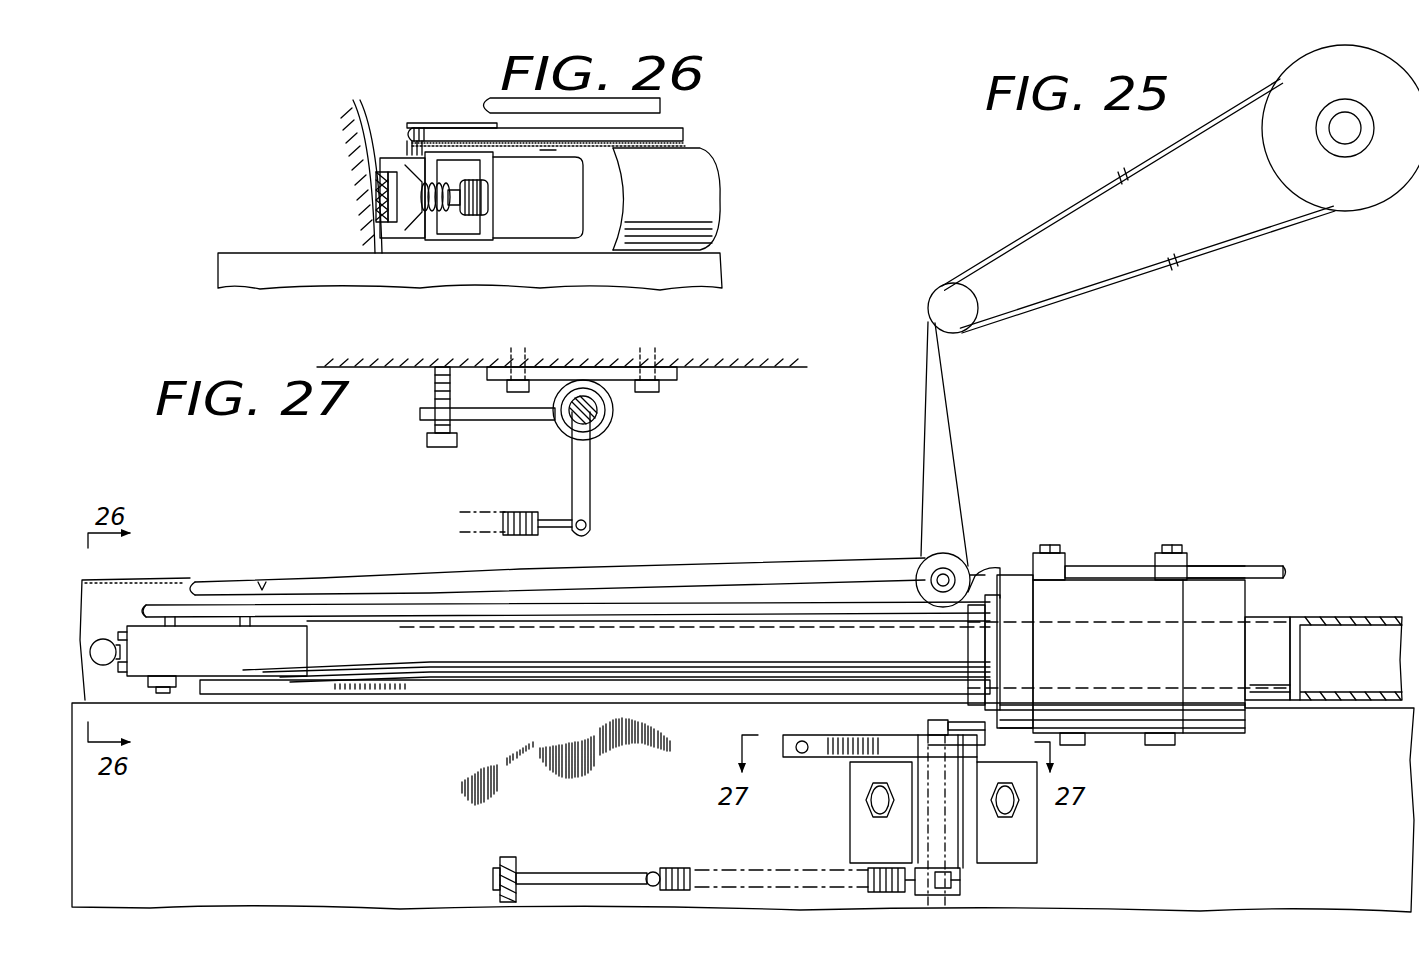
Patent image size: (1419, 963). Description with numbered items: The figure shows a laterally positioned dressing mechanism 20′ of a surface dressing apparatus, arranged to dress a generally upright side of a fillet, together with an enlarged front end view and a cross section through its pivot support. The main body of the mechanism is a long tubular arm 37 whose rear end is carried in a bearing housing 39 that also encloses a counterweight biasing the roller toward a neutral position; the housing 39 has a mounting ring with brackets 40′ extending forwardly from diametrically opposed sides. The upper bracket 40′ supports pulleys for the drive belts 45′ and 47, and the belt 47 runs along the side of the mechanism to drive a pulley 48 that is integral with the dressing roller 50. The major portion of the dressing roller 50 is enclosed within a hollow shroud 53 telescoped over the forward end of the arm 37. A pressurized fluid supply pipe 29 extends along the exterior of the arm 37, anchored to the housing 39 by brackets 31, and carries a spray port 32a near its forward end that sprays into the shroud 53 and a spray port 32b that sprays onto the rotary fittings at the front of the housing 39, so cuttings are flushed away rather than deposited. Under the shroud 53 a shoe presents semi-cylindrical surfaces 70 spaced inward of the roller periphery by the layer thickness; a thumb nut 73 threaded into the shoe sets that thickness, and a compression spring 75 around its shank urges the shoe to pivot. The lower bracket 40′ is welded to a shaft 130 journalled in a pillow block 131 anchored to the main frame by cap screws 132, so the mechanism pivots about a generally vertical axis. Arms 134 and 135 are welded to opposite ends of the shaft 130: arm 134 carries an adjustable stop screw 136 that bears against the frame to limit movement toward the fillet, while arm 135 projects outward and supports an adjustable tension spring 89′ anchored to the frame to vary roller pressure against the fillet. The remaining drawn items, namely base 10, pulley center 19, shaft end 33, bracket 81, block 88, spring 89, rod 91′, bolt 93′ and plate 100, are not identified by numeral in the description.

In FIG. 25, the base 10 is at (743, 807).
In FIG. 25, the drive pulley shaft 19 is at (1345, 140).
In FIG. 26, the dressing mechanism 20′ is at (728, 208).
In FIG. 25, the dressing mechanism 20′ is at (1102, 520).
In FIG. 26, the pressurized fluid supply pipe 29 is at (688, 140).
In FIG. 25, the pressurized fluid supply pipe 29 is at (683, 566).
In FIG. 25, the brackets 31 is at (1168, 582).
In FIG. 26, the spray port 32a is at (557, 112).
In FIG. 25, the spray port 32a is at (263, 584).
In FIG. 25, the spray port 32b is at (986, 574).
In FIG. 25, the shaft 33 is at (1352, 617).
In FIG. 26, the tubular arm 37 is at (713, 163).
In FIG. 25, the tubular arm 37 is at (718, 656).
In FIG. 25, the housing 39 is at (1129, 660).
In FIG. 25, the brackets 40′ is at (998, 566).
In FIG. 25, the drive belt 45′ is at (1118, 290).
In FIG. 26, the belt 47 is at (662, 126).
In FIG. 25, the belt 47 is at (412, 600).
In FIG. 26, the pulley 48 is at (445, 126).
In FIG. 25, the pulley 48 is at (165, 603).
In FIG. 26, the dressing roller 50 is at (375, 194).
In FIG. 26, the shroud 53 is at (558, 222).
In FIG. 25, the shroud 53 is at (212, 659).
In FIG. 26, the semi-cylindrical surfaces 70 is at (378, 166).
In FIG. 26, the thumb nut 73 is at (488, 197).
In FIG. 25, the thumb nut 73 is at (103, 639).
In FIG. 26, the compression spring 75 is at (428, 215).
In FIG. 25, the bracket 81 is at (312, 696).
In FIG. 25, the block 88 is at (1228, 578).
In FIG. 27, the spring 89 is at (518, 512).
In FIG. 25, the adjustable tension spring 89′ is at (668, 868).
In FIG. 25, the rod 91′ is at (570, 873).
In FIG. 25, the bolt 93′ is at (500, 862).
In FIG. 26, the guide plate 100 is at (345, 102).
In FIG. 25, the guide plate 100 is at (215, 578).
In FIG. 25, the shaft 130 is at (932, 727).
In FIG. 27, the pillow block 131 is at (680, 376).
In FIG. 25, the pillow block 131 is at (850, 845).
In FIG. 27, the cap screws 132 is at (508, 390).
In FIG. 25, the cap screws 132 is at (868, 800).
In FIG. 27, the arm 134 is at (522, 422).
In FIG. 25, the arm 134 is at (826, 737).
In FIG. 27, the arm 135 is at (590, 485).
In FIG. 25, the arm 135 is at (946, 893).
In FIG. 27, the adjustable stop screw 136 is at (430, 428).
In FIG. 25, the adjustable stop screw 136 is at (801, 754).